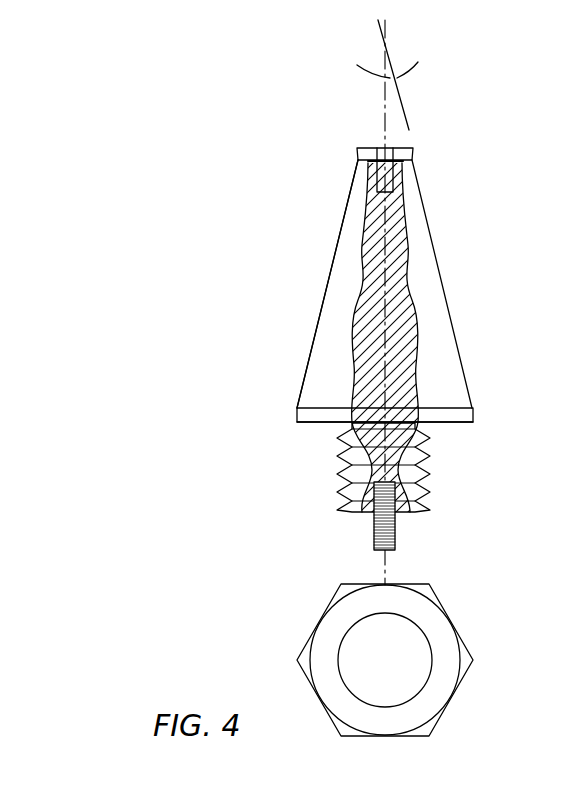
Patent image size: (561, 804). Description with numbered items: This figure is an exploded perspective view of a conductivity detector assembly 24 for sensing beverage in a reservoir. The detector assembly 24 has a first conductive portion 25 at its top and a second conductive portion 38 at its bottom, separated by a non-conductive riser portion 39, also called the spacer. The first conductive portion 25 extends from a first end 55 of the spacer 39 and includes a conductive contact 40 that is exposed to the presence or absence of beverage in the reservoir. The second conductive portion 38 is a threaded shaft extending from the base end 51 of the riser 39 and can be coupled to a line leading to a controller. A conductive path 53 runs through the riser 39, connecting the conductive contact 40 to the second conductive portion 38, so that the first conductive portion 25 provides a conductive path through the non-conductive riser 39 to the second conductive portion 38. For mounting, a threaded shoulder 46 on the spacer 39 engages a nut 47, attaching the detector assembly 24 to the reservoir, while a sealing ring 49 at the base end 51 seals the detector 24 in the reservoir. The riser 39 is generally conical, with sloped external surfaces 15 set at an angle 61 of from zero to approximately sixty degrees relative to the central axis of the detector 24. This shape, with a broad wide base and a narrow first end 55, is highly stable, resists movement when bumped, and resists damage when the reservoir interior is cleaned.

The sloped external surfaces 15 is at (336, 362).
The beverage detector assembly 24 is at (290, 155).
The first conductive portion 25 is at (440, 158).
The second conductive portion 38 is at (373, 532).
The non-conductive riser portion 39 is at (324, 284).
The conductive contact 40 is at (362, 148).
The threaded shoulder 46 is at (342, 463).
The nut 47 is at (313, 630).
The sealing ring 49 is at (297, 413).
The base end 51 is at (448, 412).
The conductive path 53 is at (390, 277).
The first end 55 is at (360, 160).
The angular range 61 is at (418, 58).